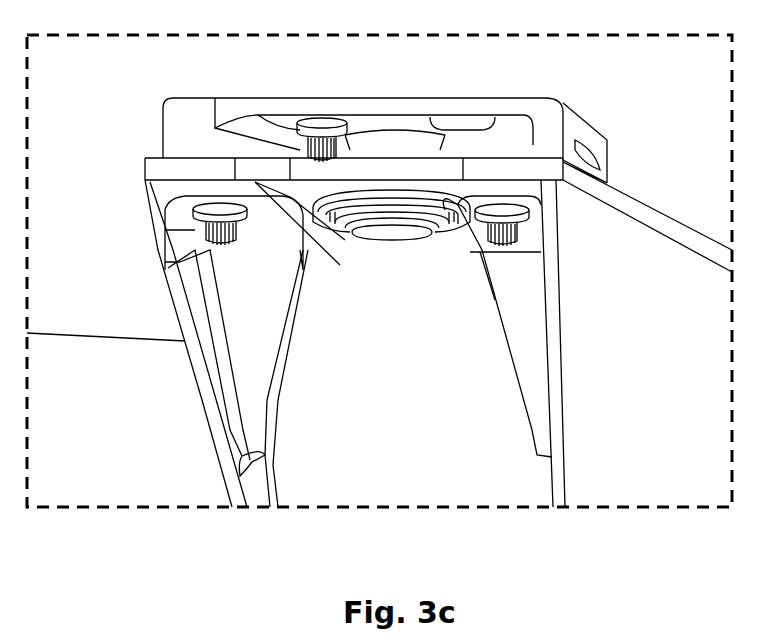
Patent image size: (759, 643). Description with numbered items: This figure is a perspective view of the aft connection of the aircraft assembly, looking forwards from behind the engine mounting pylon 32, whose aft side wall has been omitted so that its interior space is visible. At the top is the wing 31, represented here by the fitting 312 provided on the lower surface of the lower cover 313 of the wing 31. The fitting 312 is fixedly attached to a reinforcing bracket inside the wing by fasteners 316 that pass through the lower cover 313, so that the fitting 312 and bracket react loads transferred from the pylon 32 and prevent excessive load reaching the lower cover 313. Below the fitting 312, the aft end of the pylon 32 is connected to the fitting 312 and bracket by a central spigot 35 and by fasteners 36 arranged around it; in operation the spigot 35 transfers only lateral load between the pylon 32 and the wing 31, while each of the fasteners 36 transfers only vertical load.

The wing 31 is at (107, 338).
The fitting 312 is at (513, 138).
The lower cover 313 is at (214, 343).
The fasteners 316 is at (322, 135).
The engine mounting pylon 32 is at (550, 343).
The spigot 35 is at (392, 240).
The fasteners 36 is at (205, 220).